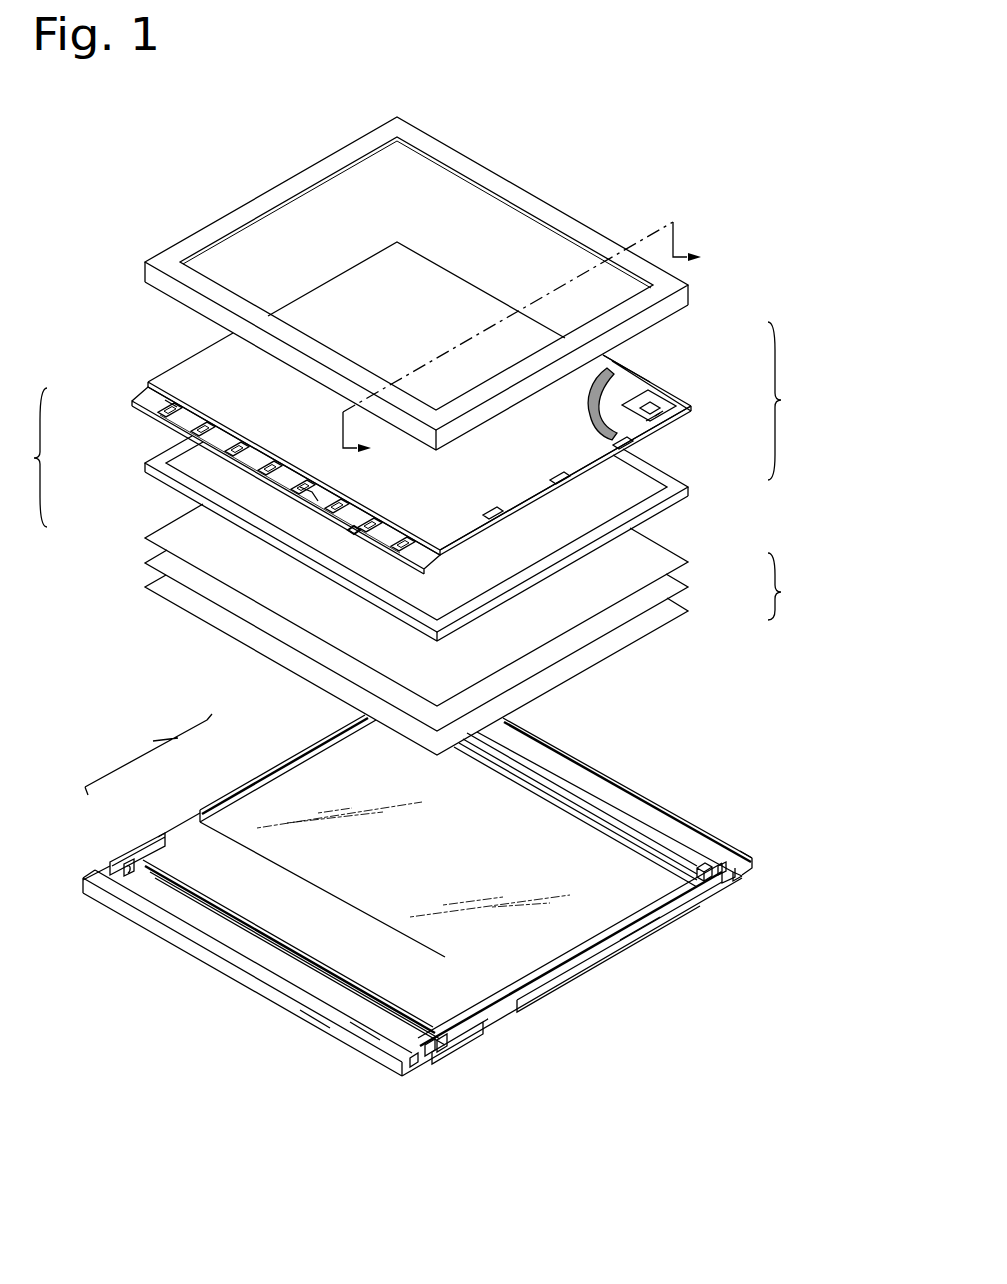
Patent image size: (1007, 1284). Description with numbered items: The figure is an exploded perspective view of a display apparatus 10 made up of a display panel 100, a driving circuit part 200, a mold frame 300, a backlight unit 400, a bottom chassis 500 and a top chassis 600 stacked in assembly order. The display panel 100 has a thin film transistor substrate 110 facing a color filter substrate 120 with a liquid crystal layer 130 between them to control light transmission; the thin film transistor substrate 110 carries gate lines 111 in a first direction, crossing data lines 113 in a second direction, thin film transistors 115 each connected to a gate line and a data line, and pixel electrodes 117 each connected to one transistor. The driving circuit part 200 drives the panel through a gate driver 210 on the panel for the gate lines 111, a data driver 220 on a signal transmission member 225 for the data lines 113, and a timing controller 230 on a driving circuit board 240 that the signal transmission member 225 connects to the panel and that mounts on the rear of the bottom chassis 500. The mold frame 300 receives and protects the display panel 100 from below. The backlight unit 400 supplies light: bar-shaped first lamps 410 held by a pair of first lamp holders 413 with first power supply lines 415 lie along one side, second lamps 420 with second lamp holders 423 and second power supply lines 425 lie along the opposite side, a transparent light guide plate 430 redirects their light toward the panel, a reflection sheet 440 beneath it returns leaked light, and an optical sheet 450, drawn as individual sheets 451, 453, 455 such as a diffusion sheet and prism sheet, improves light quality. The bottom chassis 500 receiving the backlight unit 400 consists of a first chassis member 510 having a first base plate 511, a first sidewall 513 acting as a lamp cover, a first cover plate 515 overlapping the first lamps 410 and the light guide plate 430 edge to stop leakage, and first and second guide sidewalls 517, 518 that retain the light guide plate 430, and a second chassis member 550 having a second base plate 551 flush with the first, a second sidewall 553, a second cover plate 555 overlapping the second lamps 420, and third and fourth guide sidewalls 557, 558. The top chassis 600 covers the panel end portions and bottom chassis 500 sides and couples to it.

The display apparatus 10 is at (553, 167).
The top chassis 600 is at (190, 246).
The display panel 100 is at (483, 398).
The thin film transistor substrate 110 is at (685, 409).
The gate lines 111 is at (652, 431).
The data lines 113 is at (643, 441).
The thin film transistors 115 is at (658, 414).
The pixel electrodes 117 is at (636, 393).
The color filter substrate 120 is at (606, 370).
The liquid crystal layer 130 is at (622, 376).
The driving circuit part 200 is at (223, 480).
The gate driver 210 is at (300, 552).
The data driver 220 is at (176, 413).
The signal transmission member 225 is at (166, 404).
The timing controller 230 is at (352, 530).
The driving circuit board 240 is at (158, 424).
The mold frame 300 is at (662, 492).
The optical sheet 450 is at (481, 629).
The diffusion sheet 451 is at (688, 611).
The prism sheet 453 is at (688, 587).
The protection sheet 455 is at (688, 562).
The backlight unit 400 is at (748, 733).
The first lamps 410 is at (268, 950).
The first lamp holders 413 is at (437, 1040).
The first power supply lines 415 is at (430, 1050).
The second lamps 420 is at (613, 822).
The second lamp holders 423 is at (704, 881).
The second power supply lines 425 is at (723, 878).
The light guide plate 430 is at (503, 800).
The reflection sheet 440 is at (605, 952).
The bottom chassis 500 is at (449, 918).
The first chassis member 510 is at (134, 843).
The first base plate 511 is at (413, 1072).
The first sidewall 513 is at (318, 1022).
The first cover plate 515 is at (365, 1032).
The first guide sidewall 517 is at (473, 1028).
The second guide sidewall 518 is at (167, 840).
The second chassis member 550 is at (240, 782).
The second base plate 551 is at (740, 884).
The second sidewall 553 is at (753, 860).
The second cover plate 555 is at (688, 830).
The third guide sidewall 557 is at (643, 930).
The fourth guide sidewall 558 is at (303, 751).